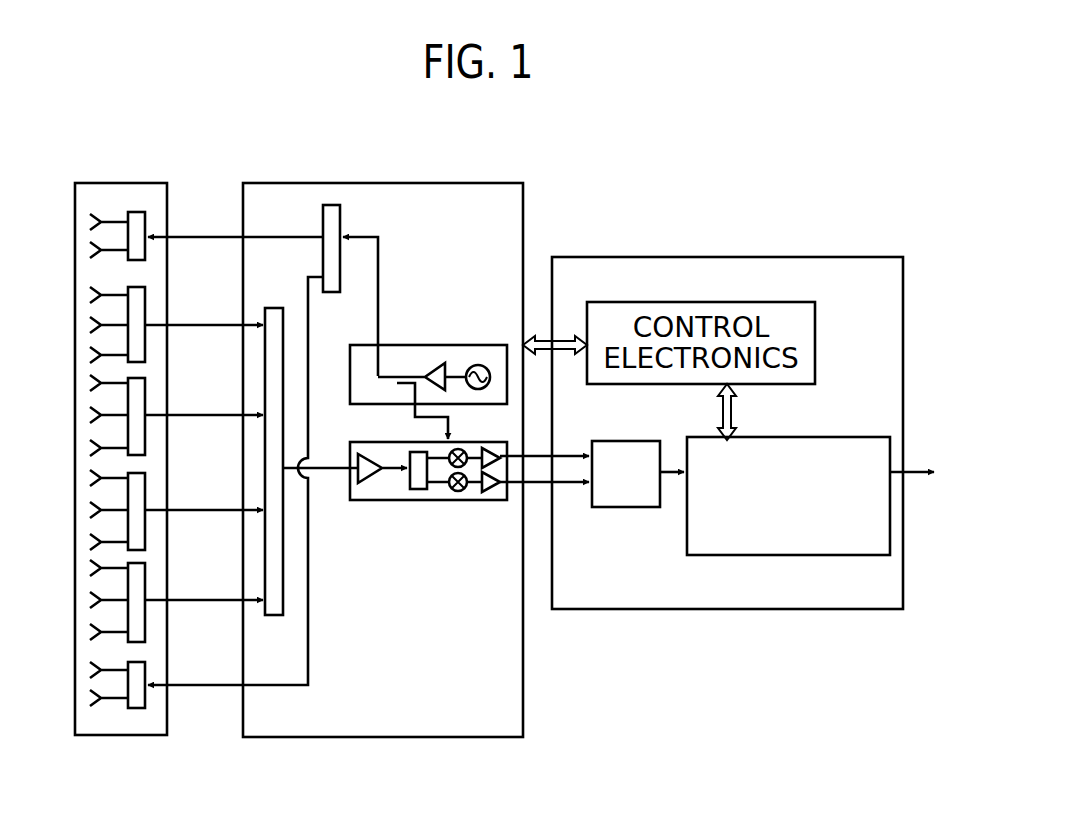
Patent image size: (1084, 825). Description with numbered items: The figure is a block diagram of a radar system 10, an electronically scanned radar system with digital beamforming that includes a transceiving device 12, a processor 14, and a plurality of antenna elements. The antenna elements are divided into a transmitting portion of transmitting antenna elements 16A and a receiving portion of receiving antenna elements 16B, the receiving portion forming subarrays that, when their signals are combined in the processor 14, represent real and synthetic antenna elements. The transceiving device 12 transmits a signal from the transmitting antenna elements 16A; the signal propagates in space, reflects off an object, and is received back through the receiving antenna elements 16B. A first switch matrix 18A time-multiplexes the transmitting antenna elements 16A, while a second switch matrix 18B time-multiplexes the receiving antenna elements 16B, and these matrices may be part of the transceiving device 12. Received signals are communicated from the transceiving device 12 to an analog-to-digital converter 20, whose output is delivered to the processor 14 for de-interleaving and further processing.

The radar system 10 is at (753, 236).
The transceiving device 12 is at (526, 715).
The processor 14 is at (737, 556).
The transmitting antenna elements 16A is at (145, 252).
The receiving antenna elements 16B is at (145, 340).
The first switch matrix 18A is at (341, 222).
The second switch matrix 18B is at (273, 615).
The analog-to-digital converter 20 is at (623, 508).